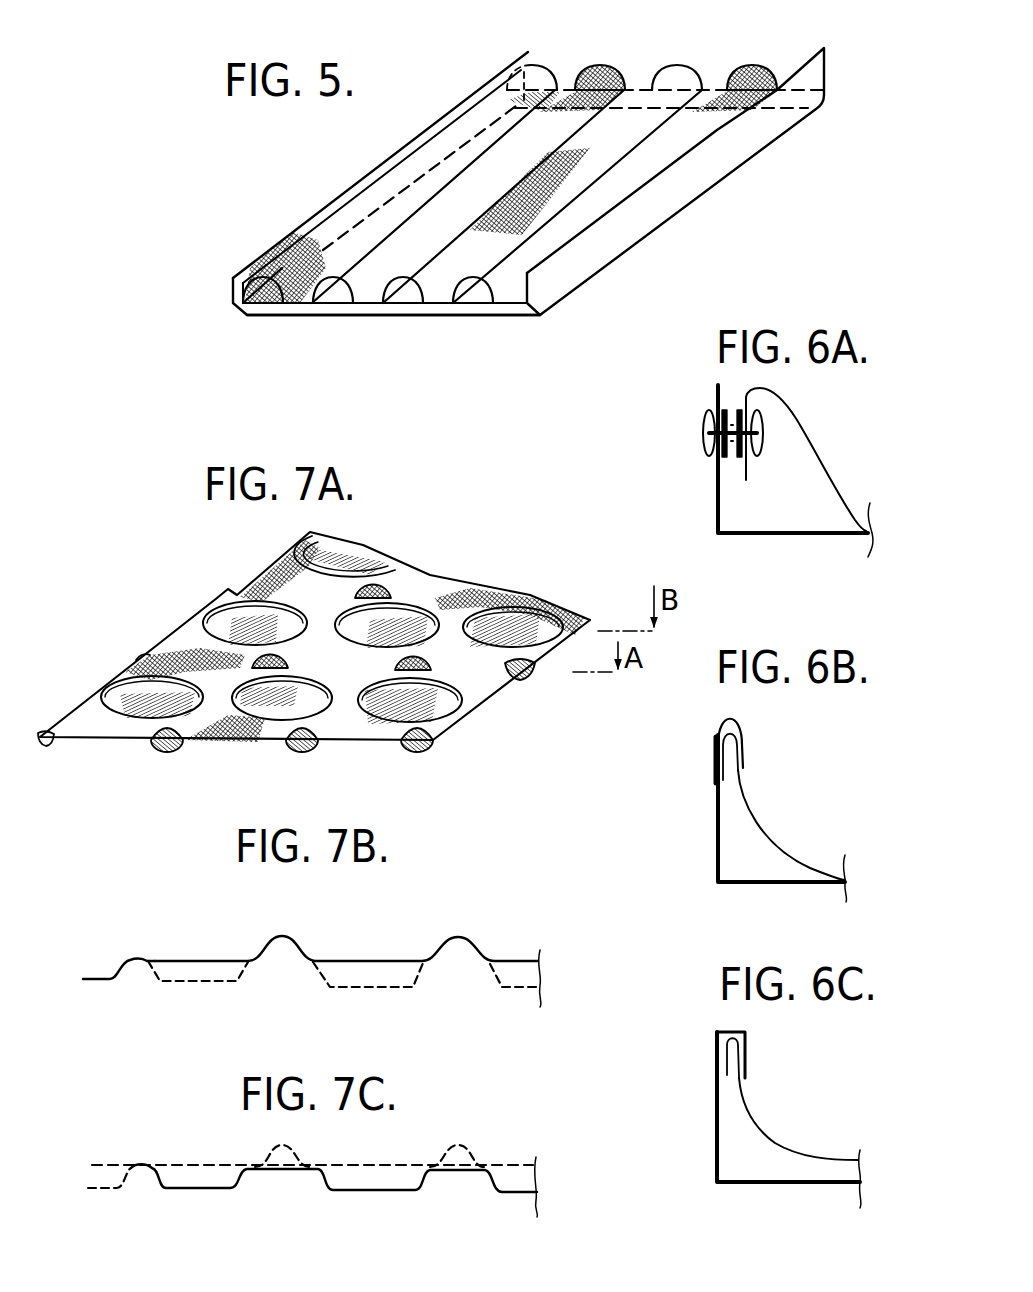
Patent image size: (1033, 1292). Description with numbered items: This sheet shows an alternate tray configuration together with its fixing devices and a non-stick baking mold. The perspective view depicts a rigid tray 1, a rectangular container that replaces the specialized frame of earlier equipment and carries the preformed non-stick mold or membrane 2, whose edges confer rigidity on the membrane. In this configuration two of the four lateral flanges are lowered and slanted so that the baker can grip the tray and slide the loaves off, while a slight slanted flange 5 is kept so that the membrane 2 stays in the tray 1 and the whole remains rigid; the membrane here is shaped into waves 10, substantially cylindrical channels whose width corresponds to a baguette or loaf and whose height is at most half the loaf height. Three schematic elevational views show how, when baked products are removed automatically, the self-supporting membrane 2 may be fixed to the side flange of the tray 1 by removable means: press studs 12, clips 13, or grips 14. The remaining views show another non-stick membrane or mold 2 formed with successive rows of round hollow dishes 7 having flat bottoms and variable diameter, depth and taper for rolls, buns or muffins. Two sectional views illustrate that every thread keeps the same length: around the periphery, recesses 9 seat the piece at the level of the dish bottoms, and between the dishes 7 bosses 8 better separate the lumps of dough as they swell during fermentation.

In FIG. 5, the rigid tray 1 is at (588, 258).
In FIG. 6A, the rigid tray 1 is at (716, 504).
In FIG. 6B, the rigid tray 1 is at (716, 839).
In FIG. 6C, the rigid tray 1 is at (716, 1144).
In FIG. 5, the preformed mold or membrane 2 is at (400, 180).
In FIG. 6A, the preformed mold or membrane 2 is at (802, 422).
In FIG. 6B, the preformed mold or membrane 2 is at (756, 805).
In FIG. 6C, the preformed mold or membrane 2 is at (756, 1118).
In FIG. 5, the slanted flange 5 is at (471, 319).
In FIG. 7A, the round hollow dishes 7 is at (497, 624).
In FIG. 7B, the round hollow dishes 7 is at (375, 990).
In FIG. 7C, the round hollow dishes 7 is at (381, 1195).
In FIG. 7A, the bosses 8 is at (386, 585).
In FIG. 7B, the bosses 8 is at (476, 939).
In FIG. 7A, the recesses 9 is at (136, 656).
In FIG. 7B, the recesses 9 is at (112, 970).
In FIG. 5, the waves 10 is at (657, 68).
In FIG. 6A, the press studs 12 is at (699, 442).
In FIG. 6B, the clips 13 is at (746, 738).
In FIG. 6C, the grips 14 is at (748, 1040).